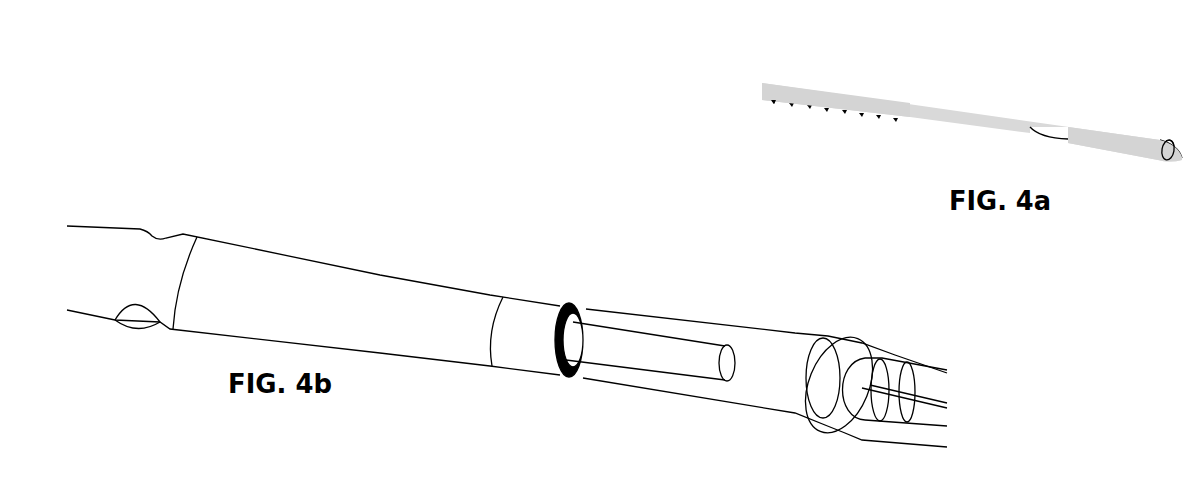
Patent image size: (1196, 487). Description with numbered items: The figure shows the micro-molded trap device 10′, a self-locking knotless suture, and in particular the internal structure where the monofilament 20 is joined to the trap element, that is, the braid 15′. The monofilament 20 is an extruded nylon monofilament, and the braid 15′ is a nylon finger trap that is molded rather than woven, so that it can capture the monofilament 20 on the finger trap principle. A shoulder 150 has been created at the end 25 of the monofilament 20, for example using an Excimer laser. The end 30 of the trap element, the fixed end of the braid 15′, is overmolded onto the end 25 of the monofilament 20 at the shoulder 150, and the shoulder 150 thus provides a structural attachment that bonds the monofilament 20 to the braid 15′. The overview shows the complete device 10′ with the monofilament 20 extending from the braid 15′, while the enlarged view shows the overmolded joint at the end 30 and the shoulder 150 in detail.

In FIG. 4A, the micro-molded trap device 10′ is at (975, 80).
In FIG. 4A, the monofilament 20 is at (837, 84).
In FIG. 4B, the monofilament 20 is at (333, 254).
In FIG. 4A, the braid 15′ is at (1147, 129).
In FIG. 4B, the braid 15′ is at (862, 304).
In FIG. 4B, the shoulder 150 is at (578, 315).
In FIG. 4B, the end of the monofilament 25 is at (638, 329).
In FIG. 4B, the fixed end of the braid 30 is at (752, 320).